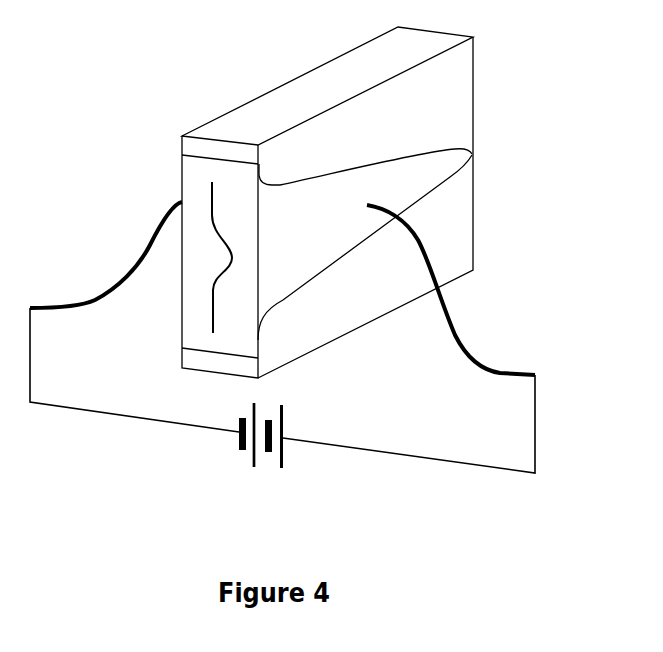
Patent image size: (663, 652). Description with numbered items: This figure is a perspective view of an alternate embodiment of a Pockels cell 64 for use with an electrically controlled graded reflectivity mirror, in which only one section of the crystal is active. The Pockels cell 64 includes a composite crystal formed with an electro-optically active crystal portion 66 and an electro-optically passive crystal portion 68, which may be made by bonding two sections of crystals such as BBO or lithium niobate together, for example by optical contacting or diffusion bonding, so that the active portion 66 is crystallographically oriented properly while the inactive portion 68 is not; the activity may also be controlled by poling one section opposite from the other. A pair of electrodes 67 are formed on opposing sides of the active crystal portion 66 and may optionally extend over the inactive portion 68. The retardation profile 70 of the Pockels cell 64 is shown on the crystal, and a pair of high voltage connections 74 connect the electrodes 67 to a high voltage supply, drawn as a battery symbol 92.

The Pockels cell 64 is at (452, 65).
The electro-optically active crystal portion 66 is at (470, 153).
The electrodes 67 is at (280, 183).
The electro-optically passive crystal portion 68 is at (452, 225).
The retardation profile 70 is at (212, 188).
The high voltage connections 74 is at (445, 303).
The battery / power source 92 is at (282, 468).